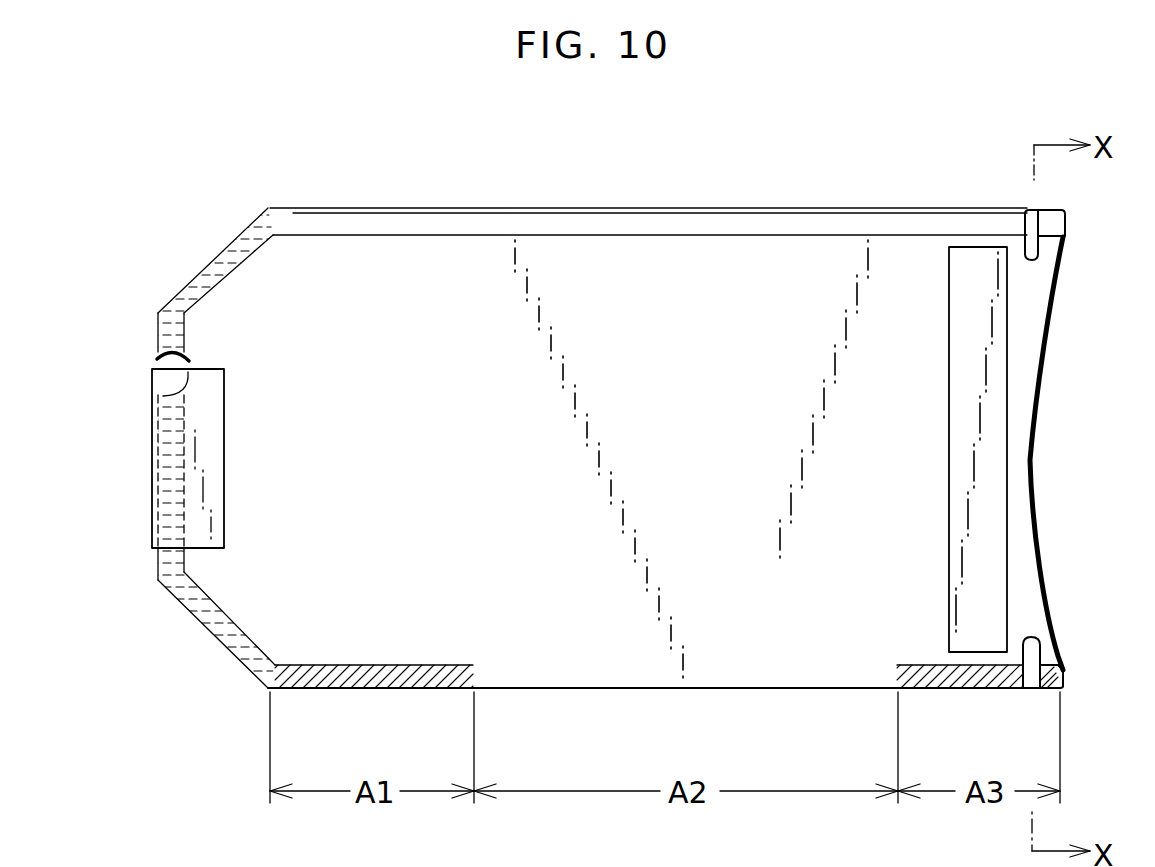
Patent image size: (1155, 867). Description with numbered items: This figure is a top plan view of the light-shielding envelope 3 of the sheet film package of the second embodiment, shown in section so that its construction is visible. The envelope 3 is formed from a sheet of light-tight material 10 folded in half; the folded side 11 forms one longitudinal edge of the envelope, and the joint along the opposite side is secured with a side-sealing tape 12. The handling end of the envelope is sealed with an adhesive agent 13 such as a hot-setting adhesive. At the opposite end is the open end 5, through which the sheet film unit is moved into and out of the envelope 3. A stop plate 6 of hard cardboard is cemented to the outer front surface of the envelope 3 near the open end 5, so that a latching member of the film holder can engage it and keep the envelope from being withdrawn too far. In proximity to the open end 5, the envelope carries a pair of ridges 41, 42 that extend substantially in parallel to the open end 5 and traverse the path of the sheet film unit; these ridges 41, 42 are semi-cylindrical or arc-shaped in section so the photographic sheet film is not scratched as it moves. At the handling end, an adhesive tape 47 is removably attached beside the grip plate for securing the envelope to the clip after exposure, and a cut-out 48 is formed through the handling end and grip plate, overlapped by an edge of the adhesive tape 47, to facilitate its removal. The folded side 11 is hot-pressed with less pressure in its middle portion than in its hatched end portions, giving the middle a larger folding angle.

The light-shielding envelope 3 is at (758, 185).
The open end 5 is at (1037, 427).
The stop plate 6 is at (1000, 350).
The sheet of light-tight material 10 is at (243, 292).
The folded side 11 is at (578, 691).
The side-sealing tape 12 is at (417, 220).
The adhesive agent 13 is at (150, 456).
The ridge 41 is at (1040, 650).
The ridge 42 is at (1045, 258).
The adhesive tape 47 is at (152, 385).
The cut-out 48 is at (160, 357).